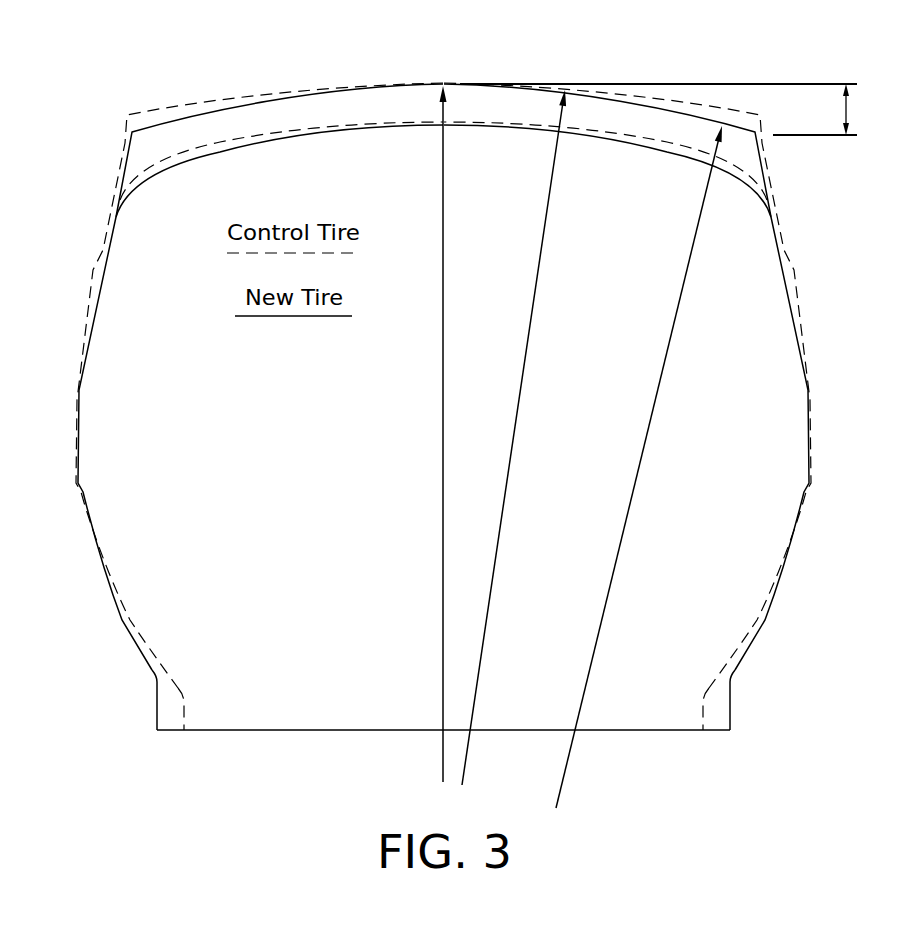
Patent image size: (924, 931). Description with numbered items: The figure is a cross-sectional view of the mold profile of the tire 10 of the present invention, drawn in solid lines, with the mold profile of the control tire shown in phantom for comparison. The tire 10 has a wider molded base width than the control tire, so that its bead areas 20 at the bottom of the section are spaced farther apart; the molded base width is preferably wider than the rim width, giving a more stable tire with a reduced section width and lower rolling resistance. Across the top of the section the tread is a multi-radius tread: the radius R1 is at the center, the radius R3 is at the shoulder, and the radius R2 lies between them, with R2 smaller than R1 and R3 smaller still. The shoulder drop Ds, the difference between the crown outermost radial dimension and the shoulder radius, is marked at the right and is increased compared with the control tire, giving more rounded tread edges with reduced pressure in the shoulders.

The tire 10 is at (678, 112).
The bead areas 20 is at (157, 708).
The center tread radius R1 is at (465, 434).
The intermediate tread radius R2 is at (532, 437).
The shoulder tread radius R3 is at (647, 467).
The shoulder drop Ds is at (674, 109).